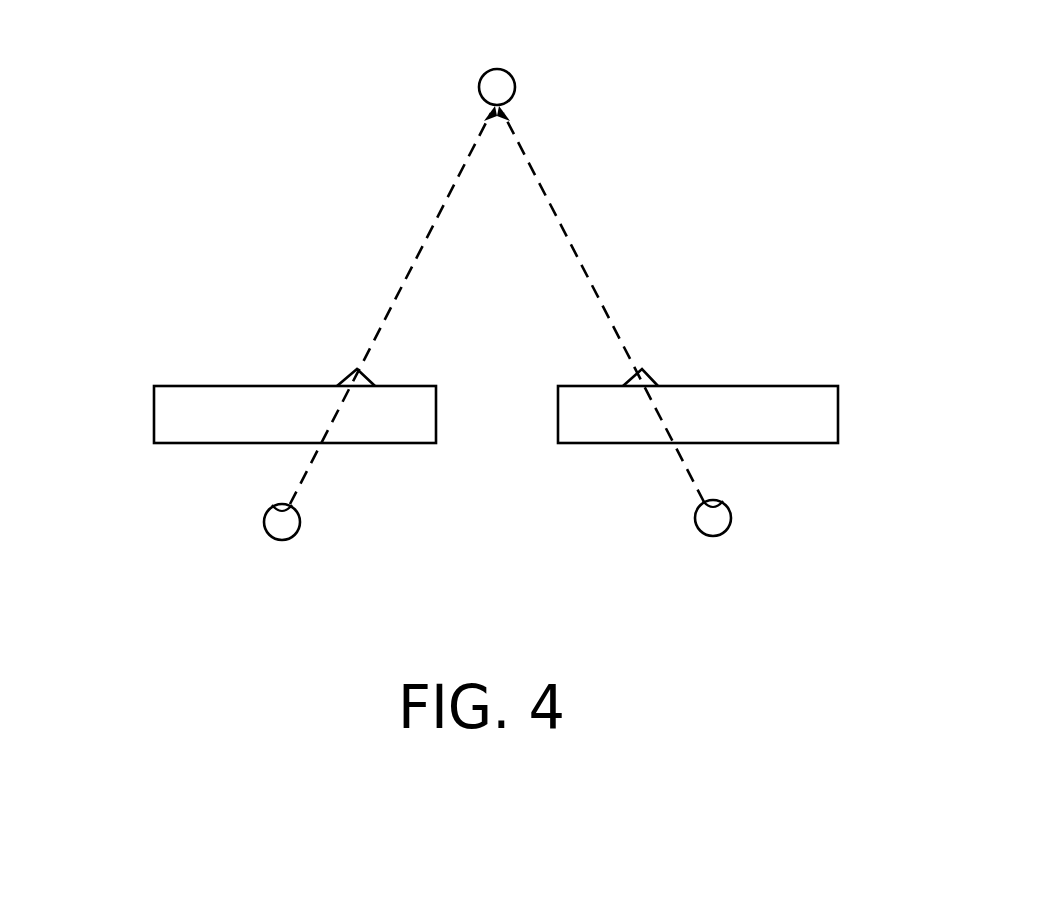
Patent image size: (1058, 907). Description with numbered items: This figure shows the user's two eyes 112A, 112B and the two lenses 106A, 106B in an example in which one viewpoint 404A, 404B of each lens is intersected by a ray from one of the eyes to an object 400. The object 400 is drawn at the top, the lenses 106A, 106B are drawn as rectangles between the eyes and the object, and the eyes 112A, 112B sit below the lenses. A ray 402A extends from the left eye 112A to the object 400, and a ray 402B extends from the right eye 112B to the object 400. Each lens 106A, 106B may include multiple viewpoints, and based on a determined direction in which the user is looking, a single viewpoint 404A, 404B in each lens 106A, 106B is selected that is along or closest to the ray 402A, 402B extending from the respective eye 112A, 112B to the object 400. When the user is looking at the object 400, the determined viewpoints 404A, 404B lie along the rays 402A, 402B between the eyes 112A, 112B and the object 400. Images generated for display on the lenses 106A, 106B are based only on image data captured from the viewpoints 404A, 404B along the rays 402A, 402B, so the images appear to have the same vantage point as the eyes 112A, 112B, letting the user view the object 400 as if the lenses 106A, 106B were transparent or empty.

The object 400 is at (477, 77).
The ray 402A is at (420, 248).
The ray 402B is at (583, 268).
The viewpoint 404A is at (353, 377).
The viewpoint 404B is at (653, 380).
The lens 106A is at (153, 415).
The lens 106B is at (838, 417).
The eye 112A is at (263, 535).
The eye 112B is at (693, 524).